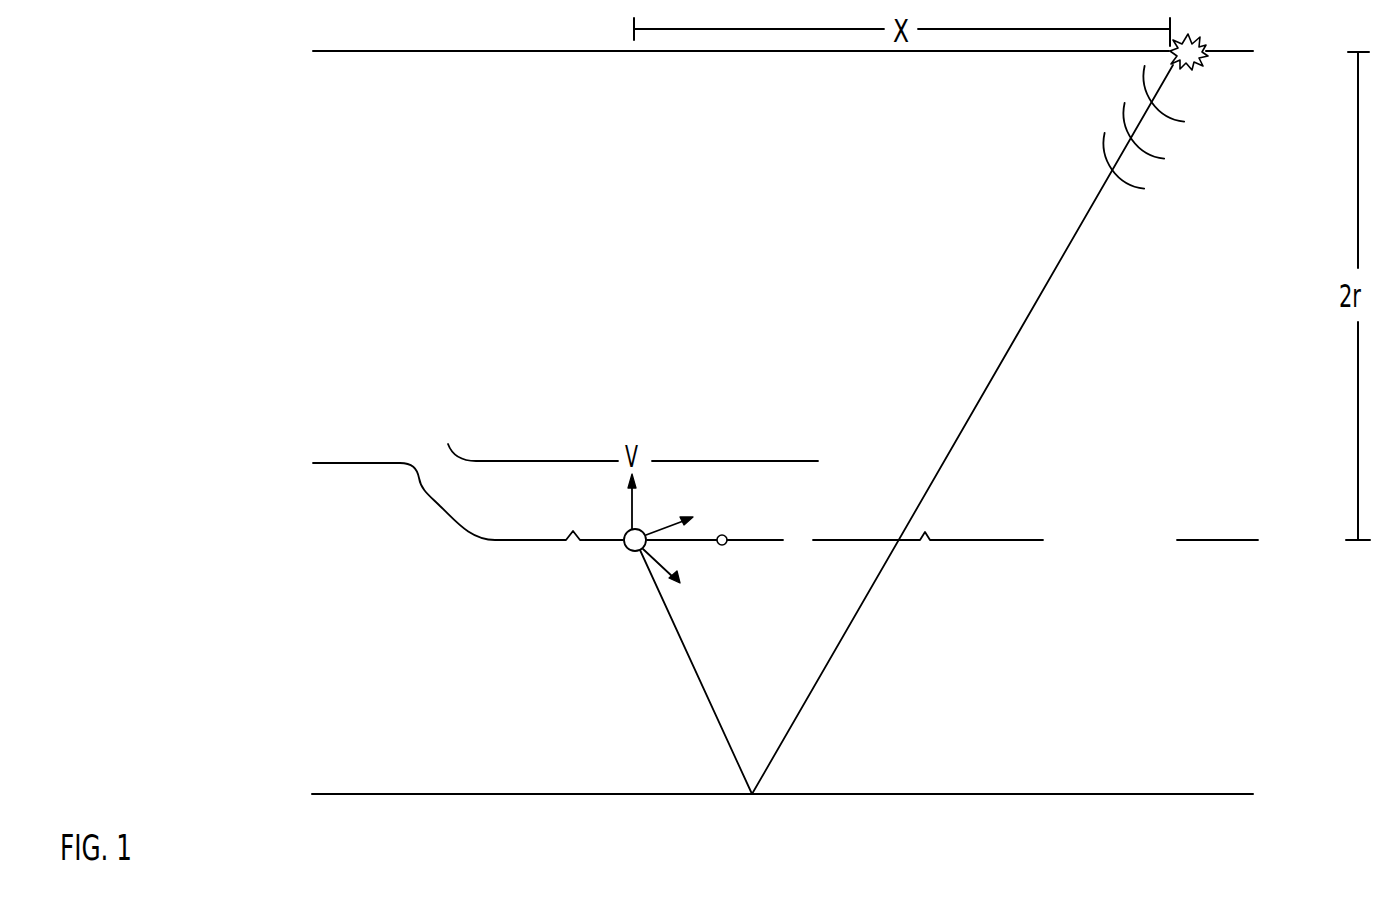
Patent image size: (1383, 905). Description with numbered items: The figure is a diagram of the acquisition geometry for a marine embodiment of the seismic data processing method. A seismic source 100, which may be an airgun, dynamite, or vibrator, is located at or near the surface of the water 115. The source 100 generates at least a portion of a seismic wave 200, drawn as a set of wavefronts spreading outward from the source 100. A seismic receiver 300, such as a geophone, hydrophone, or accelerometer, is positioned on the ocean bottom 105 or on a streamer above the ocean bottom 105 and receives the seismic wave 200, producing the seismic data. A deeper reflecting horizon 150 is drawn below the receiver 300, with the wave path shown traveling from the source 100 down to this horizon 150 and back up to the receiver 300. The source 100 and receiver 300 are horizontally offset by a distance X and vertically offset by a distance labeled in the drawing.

The surface of the water 115 is at (373, 52).
The seismic source 100 is at (1206, 58).
The seismic wave 200 is at (1131, 182).
The seismic receiver 300 is at (631, 552).
The ocean bottom 105 is at (1230, 540).
The sea floor 150 is at (750, 795).